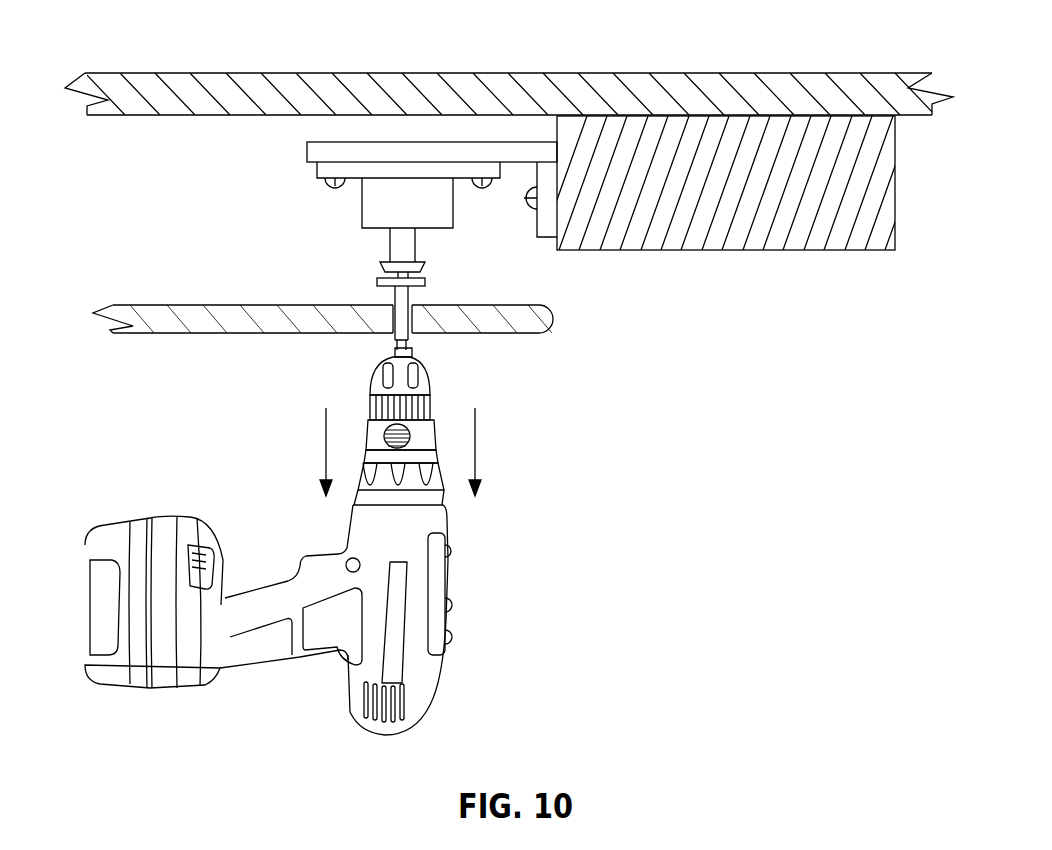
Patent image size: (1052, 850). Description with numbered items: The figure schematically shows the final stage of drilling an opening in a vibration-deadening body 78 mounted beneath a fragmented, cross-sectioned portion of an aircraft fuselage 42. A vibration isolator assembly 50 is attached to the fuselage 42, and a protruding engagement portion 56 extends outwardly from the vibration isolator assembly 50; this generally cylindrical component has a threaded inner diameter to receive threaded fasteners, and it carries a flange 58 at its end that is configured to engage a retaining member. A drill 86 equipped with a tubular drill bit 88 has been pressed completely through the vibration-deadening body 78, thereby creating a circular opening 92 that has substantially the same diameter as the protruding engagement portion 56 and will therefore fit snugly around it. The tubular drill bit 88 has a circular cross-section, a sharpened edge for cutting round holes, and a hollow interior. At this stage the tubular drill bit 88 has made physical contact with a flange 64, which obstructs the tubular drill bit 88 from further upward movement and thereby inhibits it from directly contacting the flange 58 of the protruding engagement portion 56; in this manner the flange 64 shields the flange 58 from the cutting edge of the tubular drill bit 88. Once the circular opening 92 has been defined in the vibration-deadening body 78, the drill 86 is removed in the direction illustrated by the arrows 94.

The fuselage 42 is at (386, 52).
The vibration isolator assembly 50 is at (318, 199).
The protruding engagement portion 56 is at (390, 257).
The flange 58 is at (428, 262).
The flange 64 is at (378, 283).
The vibration-deadening body 78 is at (267, 337).
The drill 86 is at (452, 565).
The tubular drill bit 88 is at (412, 297).
The circular opening 92 is at (410, 347).
The arrows 94 is at (320, 440).